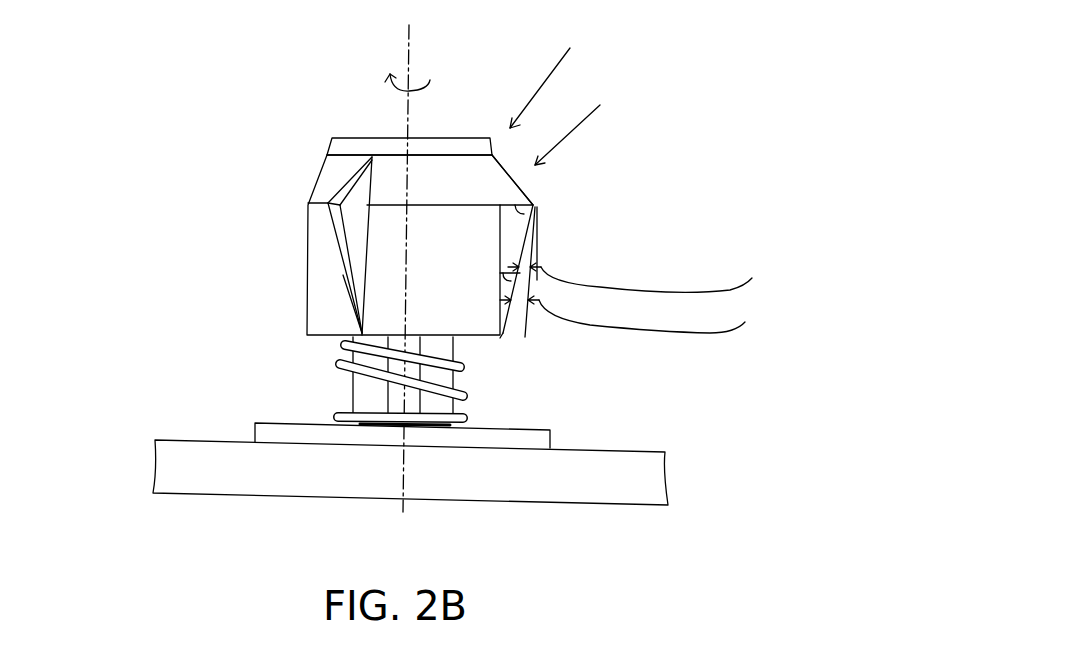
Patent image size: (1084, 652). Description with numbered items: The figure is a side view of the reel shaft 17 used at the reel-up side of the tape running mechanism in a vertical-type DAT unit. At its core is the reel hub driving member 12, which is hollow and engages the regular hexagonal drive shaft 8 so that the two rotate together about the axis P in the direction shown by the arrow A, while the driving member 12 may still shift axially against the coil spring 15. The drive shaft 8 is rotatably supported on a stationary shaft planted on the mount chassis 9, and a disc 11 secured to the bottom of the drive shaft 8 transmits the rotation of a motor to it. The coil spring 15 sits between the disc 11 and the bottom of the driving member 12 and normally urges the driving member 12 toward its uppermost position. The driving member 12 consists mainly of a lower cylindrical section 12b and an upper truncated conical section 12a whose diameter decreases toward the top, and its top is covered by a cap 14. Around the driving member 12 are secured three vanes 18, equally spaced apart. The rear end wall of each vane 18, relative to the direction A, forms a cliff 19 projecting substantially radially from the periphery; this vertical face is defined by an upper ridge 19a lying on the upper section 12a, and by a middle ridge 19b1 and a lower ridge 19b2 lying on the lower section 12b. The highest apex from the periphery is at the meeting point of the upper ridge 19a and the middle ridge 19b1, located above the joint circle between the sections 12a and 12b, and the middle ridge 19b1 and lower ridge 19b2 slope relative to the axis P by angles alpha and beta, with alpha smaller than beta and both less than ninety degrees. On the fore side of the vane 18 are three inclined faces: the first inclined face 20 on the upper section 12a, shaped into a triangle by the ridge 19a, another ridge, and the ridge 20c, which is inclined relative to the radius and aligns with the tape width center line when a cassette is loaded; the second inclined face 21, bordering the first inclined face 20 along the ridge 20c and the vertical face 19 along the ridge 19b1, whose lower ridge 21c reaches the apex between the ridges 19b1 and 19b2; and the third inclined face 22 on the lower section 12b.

The axis P is at (409, 38).
The direction of rotation A is at (430, 80).
The drive shaft 8 is at (443, 382).
The mount chassis 9 is at (637, 465).
The disc 11 is at (528, 435).
The reel hub driving member 12 is at (305, 170).
The upper truncated conical section 12a is at (325, 190).
The lower cylindrical section 12b is at (332, 288).
The cap 14 is at (347, 145).
The coil spring 15 is at (340, 363).
The reel shaft 17 is at (547, 77).
The vanes 18 is at (569, 125).
The cliff 19 is at (355, 228).
The upper ridge 19a is at (528, 193).
The middle ridge 19b1 is at (537, 240).
The lower ridge 19b2 is at (500, 338).
The first inclined face 20 is at (510, 187).
The ridge 20c is at (537, 217).
The second inclined face 21 is at (518, 247).
The lower ridge 21c is at (507, 293).
The third inclined face 22 is at (510, 318).